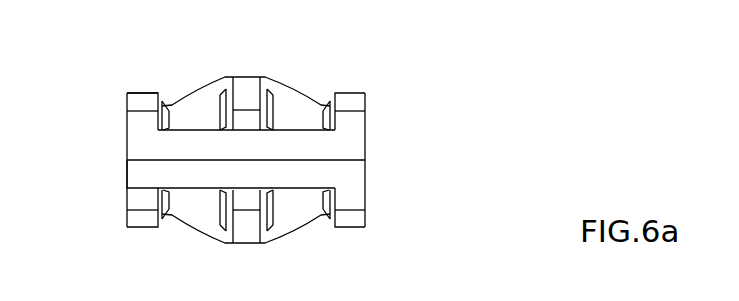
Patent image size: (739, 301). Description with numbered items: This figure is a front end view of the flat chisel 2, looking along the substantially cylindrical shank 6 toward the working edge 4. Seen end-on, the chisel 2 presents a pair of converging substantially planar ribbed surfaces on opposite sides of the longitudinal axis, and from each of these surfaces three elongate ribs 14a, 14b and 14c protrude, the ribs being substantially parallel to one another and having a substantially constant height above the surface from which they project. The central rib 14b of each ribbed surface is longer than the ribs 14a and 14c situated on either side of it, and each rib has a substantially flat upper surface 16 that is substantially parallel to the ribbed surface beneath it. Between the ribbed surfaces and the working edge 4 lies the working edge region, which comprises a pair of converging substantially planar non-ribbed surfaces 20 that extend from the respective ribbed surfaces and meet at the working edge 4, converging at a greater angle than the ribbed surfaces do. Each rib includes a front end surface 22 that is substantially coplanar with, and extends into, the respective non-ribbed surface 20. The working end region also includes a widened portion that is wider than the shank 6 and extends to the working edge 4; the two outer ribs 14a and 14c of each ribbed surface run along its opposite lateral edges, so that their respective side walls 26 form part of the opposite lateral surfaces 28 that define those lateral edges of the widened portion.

The flat chisel 2 is at (498, 80).
The working edge 4 is at (343, 160).
The shank 6 is at (297, 90).
The rib 14a is at (145, 92).
The central rib 14b is at (247, 228).
The rib 14c is at (150, 212).
The flat upper surface 16 is at (352, 217).
The non-ribbed surface 20 is at (160, 173).
The front end surface 22 is at (352, 192).
The side wall 26 is at (164, 104).
The lateral surface 28 is at (127, 122).